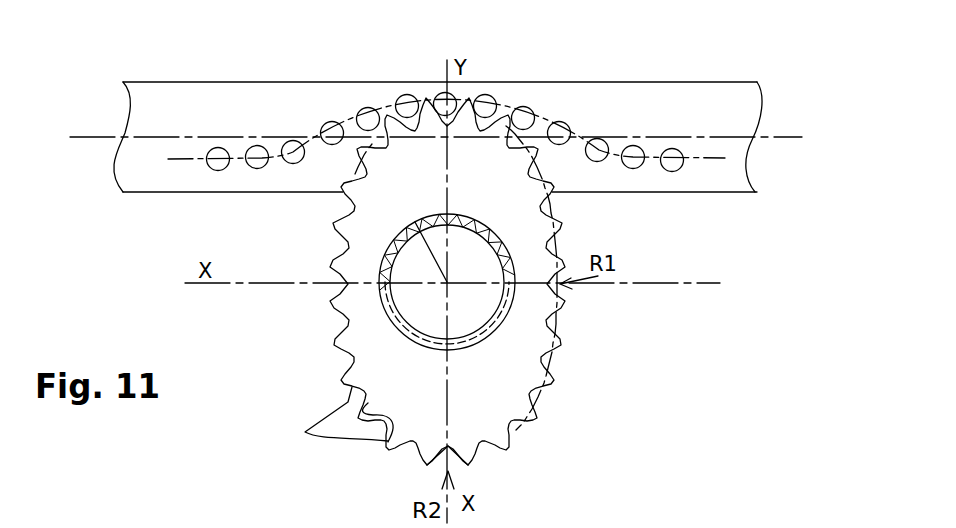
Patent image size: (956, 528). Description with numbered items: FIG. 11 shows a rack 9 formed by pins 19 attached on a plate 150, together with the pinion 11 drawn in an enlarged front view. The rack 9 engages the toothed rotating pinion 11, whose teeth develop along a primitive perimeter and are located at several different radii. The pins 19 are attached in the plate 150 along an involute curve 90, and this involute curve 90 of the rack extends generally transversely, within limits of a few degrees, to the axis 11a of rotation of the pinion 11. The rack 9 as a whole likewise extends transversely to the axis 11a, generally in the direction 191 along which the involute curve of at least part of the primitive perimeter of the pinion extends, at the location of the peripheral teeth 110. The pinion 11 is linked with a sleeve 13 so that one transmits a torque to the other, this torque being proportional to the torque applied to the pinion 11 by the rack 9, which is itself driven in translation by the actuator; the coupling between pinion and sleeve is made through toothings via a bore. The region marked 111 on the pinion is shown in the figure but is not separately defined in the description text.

The rack 9 is at (571, 116).
The pins 19 is at (362, 109).
The involute curve 90 is at (643, 167).
The plate 150 is at (695, 100).
The direction 191 is at (734, 136).
The pinion 11 is at (513, 380).
The axis of rotation 11a is at (440, 230).
The sleeve 13 is at (425, 310).
The peripheral teeth 110 is at (307, 433).
The tooth root 111 is at (508, 476).